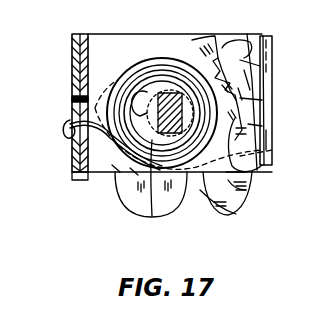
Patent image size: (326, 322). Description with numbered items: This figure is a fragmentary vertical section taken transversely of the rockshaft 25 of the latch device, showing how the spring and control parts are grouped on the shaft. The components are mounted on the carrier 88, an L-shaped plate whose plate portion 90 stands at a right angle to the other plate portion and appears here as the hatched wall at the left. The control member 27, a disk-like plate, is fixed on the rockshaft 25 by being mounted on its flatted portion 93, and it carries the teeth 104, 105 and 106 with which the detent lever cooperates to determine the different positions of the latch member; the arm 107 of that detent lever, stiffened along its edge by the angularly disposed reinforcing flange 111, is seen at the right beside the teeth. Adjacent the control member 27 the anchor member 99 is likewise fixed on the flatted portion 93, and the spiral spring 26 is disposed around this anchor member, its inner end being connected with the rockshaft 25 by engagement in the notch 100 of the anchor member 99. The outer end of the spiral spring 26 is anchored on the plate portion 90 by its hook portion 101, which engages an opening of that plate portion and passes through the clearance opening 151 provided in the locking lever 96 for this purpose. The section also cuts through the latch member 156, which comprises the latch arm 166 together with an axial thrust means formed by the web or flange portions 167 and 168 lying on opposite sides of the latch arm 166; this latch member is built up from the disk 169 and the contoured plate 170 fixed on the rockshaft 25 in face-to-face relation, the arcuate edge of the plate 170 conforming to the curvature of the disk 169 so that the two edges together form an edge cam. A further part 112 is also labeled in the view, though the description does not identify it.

The carrier 88 is at (72, 48).
The plate portion 90 is at (73, 70).
The clearance opening 151 is at (73, 100).
The hook portion 101 is at (66, 128).
The locking lever 96 is at (87, 181).
The flange portion 167 is at (117, 170).
The latch arm 166 is at (135, 178).
The anchor member 99 is at (150, 203).
The flange portion 168 is at (182, 215).
The latch member 156 is at (210, 211).
The flatted portion 93 is at (224, 200).
The disk 169 is at (238, 183).
The recess 112 is at (235, 172).
The contoured plate 170 is at (270, 150).
The reinforcing flange 111 is at (262, 125).
The tooth 106 is at (257, 104).
The tooth 105 is at (265, 70).
The arm 107 is at (264, 48).
The tooth 104 is at (232, 48).
The control member 27 is at (201, 44).
The rockshaft 25 is at (166, 62).
The spiral spring 26 is at (162, 93).
The notch 100 is at (142, 96).